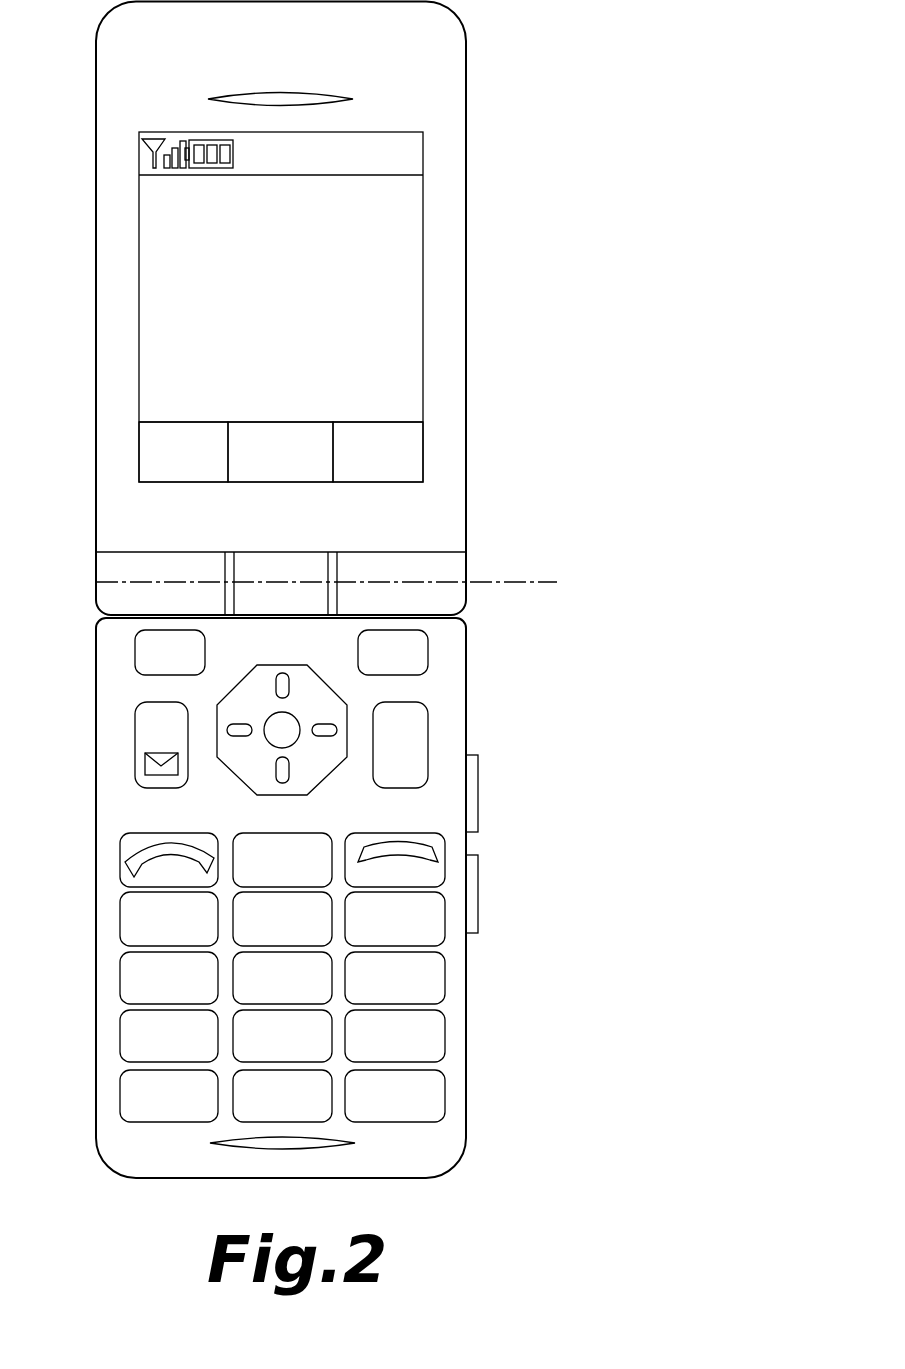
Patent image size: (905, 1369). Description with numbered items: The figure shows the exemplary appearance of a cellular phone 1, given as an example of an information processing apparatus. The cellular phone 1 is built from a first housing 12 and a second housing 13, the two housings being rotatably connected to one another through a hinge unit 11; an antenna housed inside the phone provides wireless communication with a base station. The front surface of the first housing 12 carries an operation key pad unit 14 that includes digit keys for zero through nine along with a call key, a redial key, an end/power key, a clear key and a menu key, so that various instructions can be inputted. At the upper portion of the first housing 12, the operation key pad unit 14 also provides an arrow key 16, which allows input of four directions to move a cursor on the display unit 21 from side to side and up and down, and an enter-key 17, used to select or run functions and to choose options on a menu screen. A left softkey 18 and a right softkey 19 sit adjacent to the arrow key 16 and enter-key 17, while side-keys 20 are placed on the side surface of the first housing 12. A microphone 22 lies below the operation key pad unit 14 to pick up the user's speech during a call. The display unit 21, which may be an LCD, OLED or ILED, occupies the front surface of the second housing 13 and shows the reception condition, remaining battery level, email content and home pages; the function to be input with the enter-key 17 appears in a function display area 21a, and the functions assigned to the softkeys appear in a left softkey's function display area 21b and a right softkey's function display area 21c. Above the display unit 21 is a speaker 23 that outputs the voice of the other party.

The cellular phone 1 is at (316, 610).
The hinge unit 11 is at (318, 575).
The first housing 12 is at (289, 919).
The second housing 13 is at (292, 308).
The operation key pad unit 14 is at (90, 633).
The arrow key 16 is at (275, 686).
The enter-key 17 is at (290, 720).
The left softkey 18 is at (135, 652).
The right softkey 19 is at (428, 648).
The side-keys 20 is at (478, 822).
The display unit 21 is at (285, 307).
The function display area 21a is at (313, 441).
The left softkey's function display area 21b is at (145, 455).
The right softkey's function display area 21c is at (420, 455).
The microphone 22 is at (283, 1148).
The speaker 23 is at (210, 100).